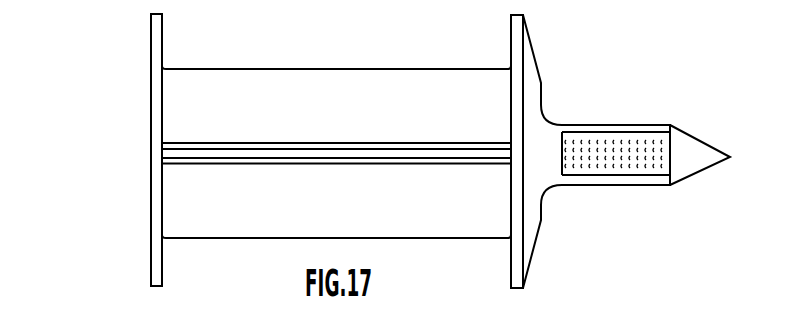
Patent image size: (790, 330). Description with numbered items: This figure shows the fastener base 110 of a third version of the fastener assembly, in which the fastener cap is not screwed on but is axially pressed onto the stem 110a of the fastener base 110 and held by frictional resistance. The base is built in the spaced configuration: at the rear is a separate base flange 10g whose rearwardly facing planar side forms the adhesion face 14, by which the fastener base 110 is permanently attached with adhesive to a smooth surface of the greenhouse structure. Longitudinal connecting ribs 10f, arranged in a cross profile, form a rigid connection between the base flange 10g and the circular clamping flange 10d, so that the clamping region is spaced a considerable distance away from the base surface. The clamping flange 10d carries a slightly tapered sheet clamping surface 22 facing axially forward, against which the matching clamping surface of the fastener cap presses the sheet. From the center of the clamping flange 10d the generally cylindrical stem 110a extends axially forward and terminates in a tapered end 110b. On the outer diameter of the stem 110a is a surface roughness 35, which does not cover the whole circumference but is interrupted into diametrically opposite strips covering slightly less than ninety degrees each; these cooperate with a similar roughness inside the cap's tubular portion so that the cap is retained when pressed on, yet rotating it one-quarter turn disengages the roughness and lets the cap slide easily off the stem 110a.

The fastener base 110 is at (420, 147).
The stem 110a is at (609, 170).
The conical tip 110b is at (680, 166).
The base flange 10g is at (158, 40).
The longitudinal connecting ribs 10f is at (237, 132).
The clamping flange 10d is at (527, 67).
The adhesion face 14 is at (175, 152).
The sheet clamping surface 22 is at (532, 97).
The surface roughness 35 is at (625, 148).